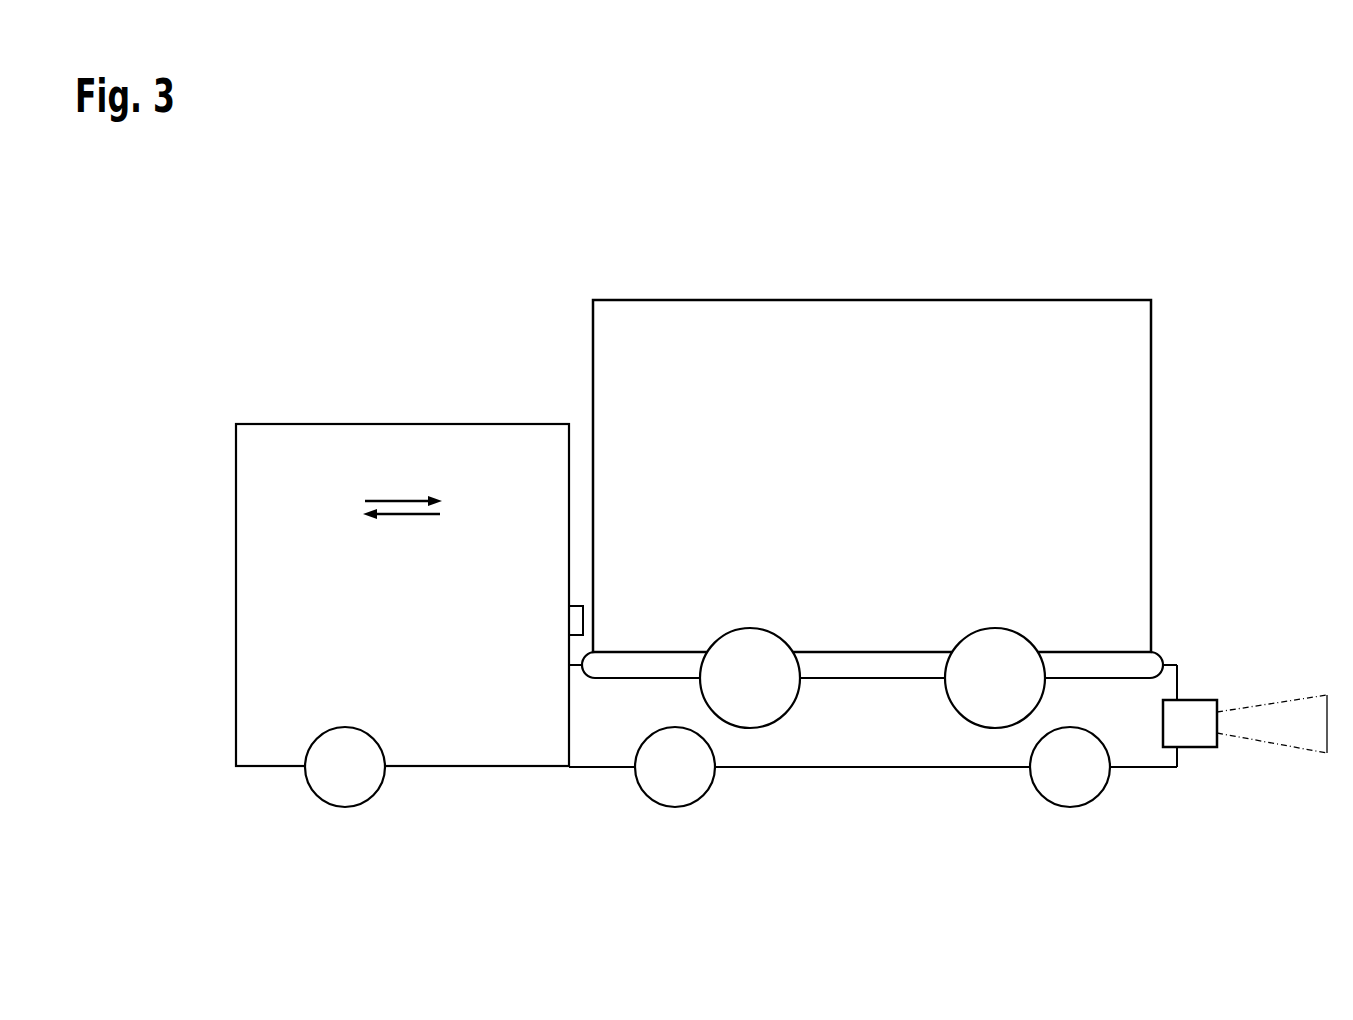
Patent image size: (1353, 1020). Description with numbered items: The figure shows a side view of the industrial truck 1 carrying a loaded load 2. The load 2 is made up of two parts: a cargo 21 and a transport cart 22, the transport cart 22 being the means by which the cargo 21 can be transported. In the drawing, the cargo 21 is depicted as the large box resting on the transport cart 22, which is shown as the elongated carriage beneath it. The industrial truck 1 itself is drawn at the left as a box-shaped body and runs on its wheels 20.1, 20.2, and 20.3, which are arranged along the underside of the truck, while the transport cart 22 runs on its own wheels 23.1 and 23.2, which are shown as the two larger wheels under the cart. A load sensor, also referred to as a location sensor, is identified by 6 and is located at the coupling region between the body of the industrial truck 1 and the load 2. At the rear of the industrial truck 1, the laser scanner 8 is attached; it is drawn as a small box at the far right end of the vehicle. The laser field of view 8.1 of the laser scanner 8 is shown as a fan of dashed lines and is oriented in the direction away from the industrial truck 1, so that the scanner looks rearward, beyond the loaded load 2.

The industrial truck 1 is at (448, 467).
The load 2 is at (1197, 307).
The load sensor 6 is at (573, 621).
The laser scanner 8 is at (1200, 733).
The laser field of view 8.1 is at (1272, 733).
The wheel 20.1 is at (345, 780).
The wheel 20.2 is at (677, 780).
The wheel 20.3 is at (1070, 780).
The cargo 21 is at (1125, 497).
The transport cart 22 is at (1155, 656).
The wheel 23.1 is at (757, 710).
The wheel 23.2 is at (990, 710).